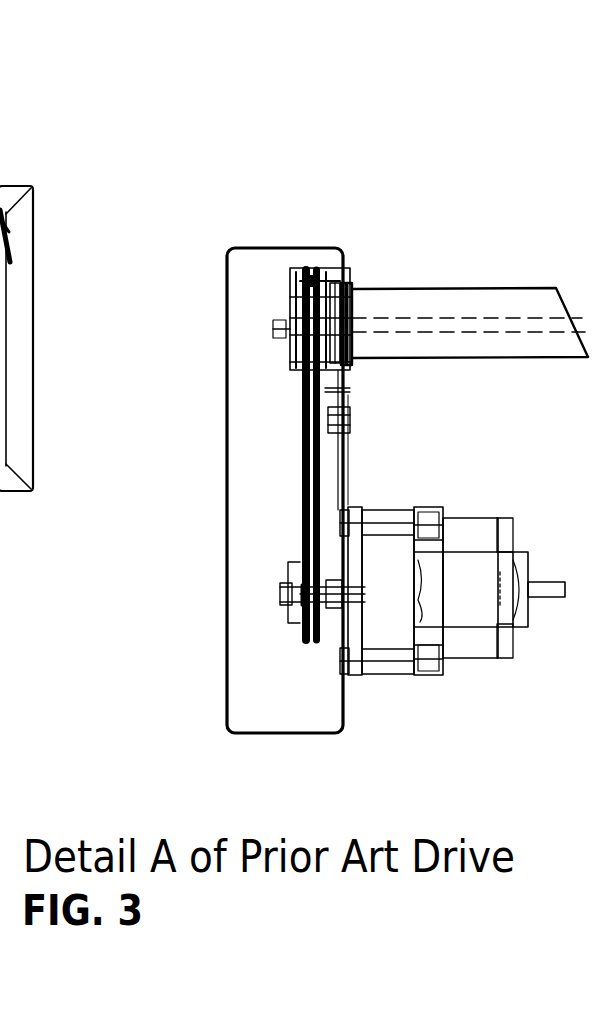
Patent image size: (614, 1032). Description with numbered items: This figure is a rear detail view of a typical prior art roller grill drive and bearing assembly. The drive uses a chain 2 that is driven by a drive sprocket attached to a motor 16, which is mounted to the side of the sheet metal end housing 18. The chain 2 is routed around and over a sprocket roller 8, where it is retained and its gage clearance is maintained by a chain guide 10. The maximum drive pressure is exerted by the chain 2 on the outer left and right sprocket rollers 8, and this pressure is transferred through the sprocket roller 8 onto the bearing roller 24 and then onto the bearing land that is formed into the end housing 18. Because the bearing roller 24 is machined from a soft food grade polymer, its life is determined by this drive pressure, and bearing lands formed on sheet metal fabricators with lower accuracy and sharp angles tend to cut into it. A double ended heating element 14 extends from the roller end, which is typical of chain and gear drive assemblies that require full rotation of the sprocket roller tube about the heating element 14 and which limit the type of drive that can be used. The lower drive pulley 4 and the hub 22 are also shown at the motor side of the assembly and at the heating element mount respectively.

The chain 2 is at (303, 483).
The lower drive pulley 4 is at (305, 637).
The sprocket roller 8 is at (297, 273).
The chain guide 10 is at (322, 270).
The double ended heating element 14 is at (488, 315).
The motor 16 is at (392, 675).
The end housing 18 is at (224, 378).
The blade hub 22 is at (352, 368).
The bearing roller 24 is at (343, 287).